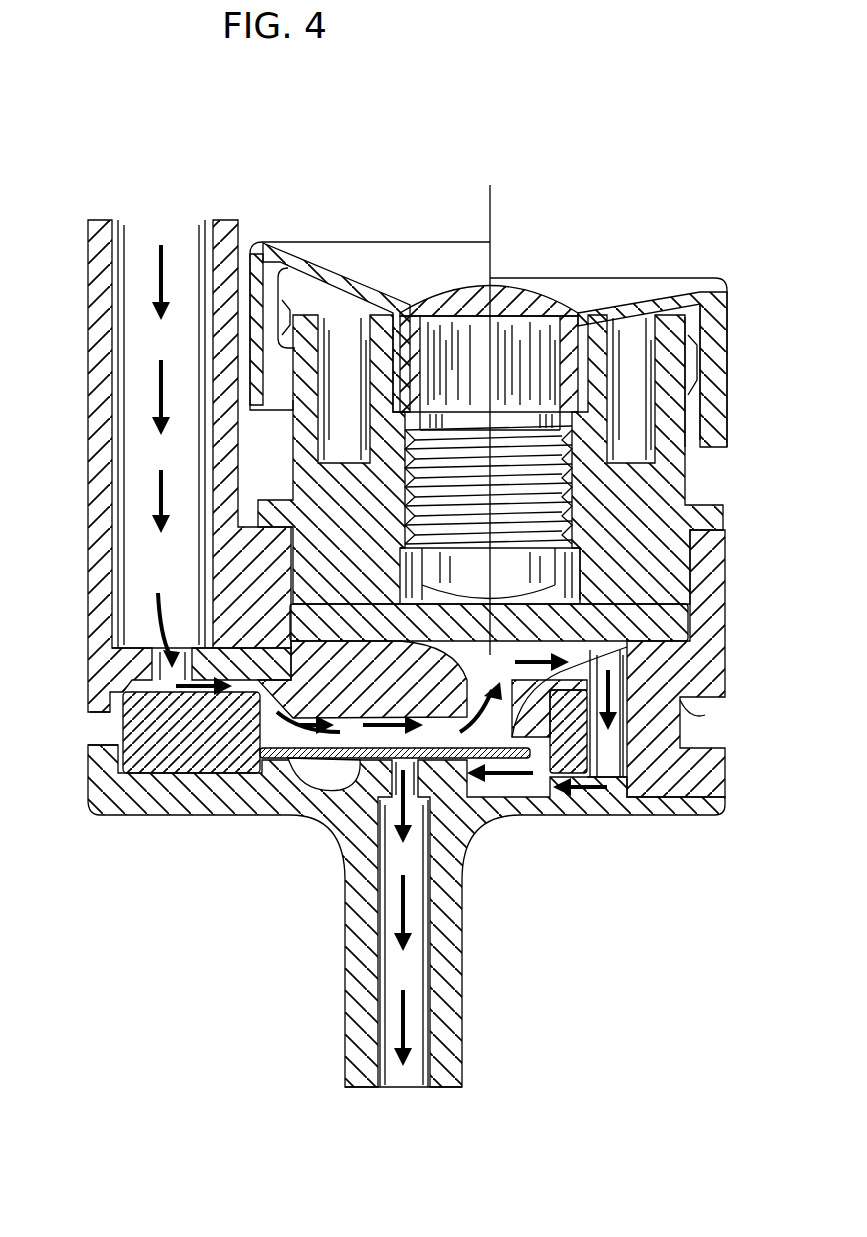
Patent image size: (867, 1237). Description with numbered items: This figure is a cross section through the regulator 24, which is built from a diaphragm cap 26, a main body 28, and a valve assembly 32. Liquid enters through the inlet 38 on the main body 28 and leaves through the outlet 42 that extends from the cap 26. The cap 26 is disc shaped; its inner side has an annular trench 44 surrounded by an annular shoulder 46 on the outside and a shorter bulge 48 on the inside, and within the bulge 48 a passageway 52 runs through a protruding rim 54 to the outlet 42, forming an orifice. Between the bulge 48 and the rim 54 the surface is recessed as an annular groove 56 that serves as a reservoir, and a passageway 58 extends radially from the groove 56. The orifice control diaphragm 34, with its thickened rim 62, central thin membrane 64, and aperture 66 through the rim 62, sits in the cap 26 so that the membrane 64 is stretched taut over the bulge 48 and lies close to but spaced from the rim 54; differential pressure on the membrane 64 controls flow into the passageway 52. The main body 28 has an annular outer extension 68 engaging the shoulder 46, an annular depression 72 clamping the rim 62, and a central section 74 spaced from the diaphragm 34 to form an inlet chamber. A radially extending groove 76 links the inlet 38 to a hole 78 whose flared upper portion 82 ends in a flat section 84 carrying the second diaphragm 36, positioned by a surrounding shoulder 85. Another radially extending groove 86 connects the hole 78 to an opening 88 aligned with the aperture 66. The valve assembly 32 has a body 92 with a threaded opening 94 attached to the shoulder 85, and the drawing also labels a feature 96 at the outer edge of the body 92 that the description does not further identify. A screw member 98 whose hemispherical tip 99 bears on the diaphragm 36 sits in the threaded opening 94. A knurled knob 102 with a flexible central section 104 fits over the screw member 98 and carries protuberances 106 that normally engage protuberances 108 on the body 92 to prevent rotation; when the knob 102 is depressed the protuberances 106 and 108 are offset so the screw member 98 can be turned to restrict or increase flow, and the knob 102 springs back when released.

The regulator 24 is at (752, 606).
The diaphragm cap 26 is at (727, 796).
The main body 28 is at (728, 691).
The valve assembly 32 is at (534, 459).
The orifice control diaphragm 34 is at (685, 752).
The second diaphragm 36 is at (690, 620).
The inlet 38 is at (88, 393).
The outlet 42 is at (462, 1010).
The annular groove or trench 44 is at (160, 790).
The annular shoulder 46 is at (118, 735).
The bulge 48 is at (310, 758).
The passageway 52 is at (455, 870).
The annular bulge or protruding rim 54 is at (468, 800).
The annular groove 56 is at (345, 775).
The passageway 58 is at (578, 800).
The thickened rim 62 is at (240, 778).
The membrane 64 is at (330, 768).
The aperture 66 is at (615, 790).
The annular outer extension 68 is at (727, 705).
The annular depression 72 is at (705, 714).
The central section 74 is at (283, 755).
The radially extending groove 76 is at (328, 705).
The hole 78 is at (450, 700).
The flared upper portion 82 is at (455, 650).
The flat section 84 is at (332, 650).
The shoulder 85 is at (727, 545).
The radially extending groove 86 is at (548, 792).
The opening 88 is at (627, 667).
The body 92 is at (688, 500).
The threaded opening 94 is at (575, 490).
The lip 96 is at (724, 517).
The screw member 98 is at (580, 565).
The hemispherical tip 99 is at (548, 645).
The knurled knob 102 is at (518, 317).
The flexible central section 104 is at (408, 242).
The protuberances 106 is at (293, 410).
The protuberances 108 is at (295, 332).